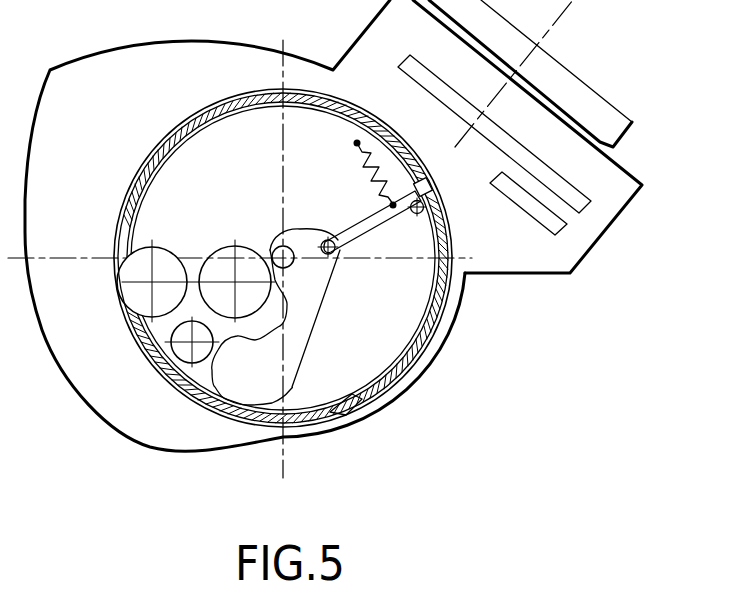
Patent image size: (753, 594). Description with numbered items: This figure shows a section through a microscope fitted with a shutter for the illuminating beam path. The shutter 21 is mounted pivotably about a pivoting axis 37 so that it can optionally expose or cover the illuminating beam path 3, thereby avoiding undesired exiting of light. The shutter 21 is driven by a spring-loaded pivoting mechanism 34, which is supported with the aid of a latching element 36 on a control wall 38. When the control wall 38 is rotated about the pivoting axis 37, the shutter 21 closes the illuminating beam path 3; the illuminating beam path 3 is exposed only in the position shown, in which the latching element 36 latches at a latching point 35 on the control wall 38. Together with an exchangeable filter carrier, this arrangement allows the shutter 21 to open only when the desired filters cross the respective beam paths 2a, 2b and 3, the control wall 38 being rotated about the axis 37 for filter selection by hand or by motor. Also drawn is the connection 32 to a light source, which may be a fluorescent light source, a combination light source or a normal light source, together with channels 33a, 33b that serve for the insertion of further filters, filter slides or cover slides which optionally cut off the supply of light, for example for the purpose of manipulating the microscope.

The beam path 2a is at (163, 262).
The beam path 2b is at (243, 262).
The illuminating beam path 3 is at (183, 350).
The shutter 21 is at (255, 390).
The connection to a light source 32 is at (582, 95).
The channel 33a is at (567, 227).
The channel 33b is at (585, 203).
The spring-loaded pivoting mechanism 34 is at (367, 227).
The latching point 35 is at (360, 400).
The latching element 36 is at (413, 209).
The pivoting axis 37 is at (286, 252).
The control wall 38 is at (332, 413).